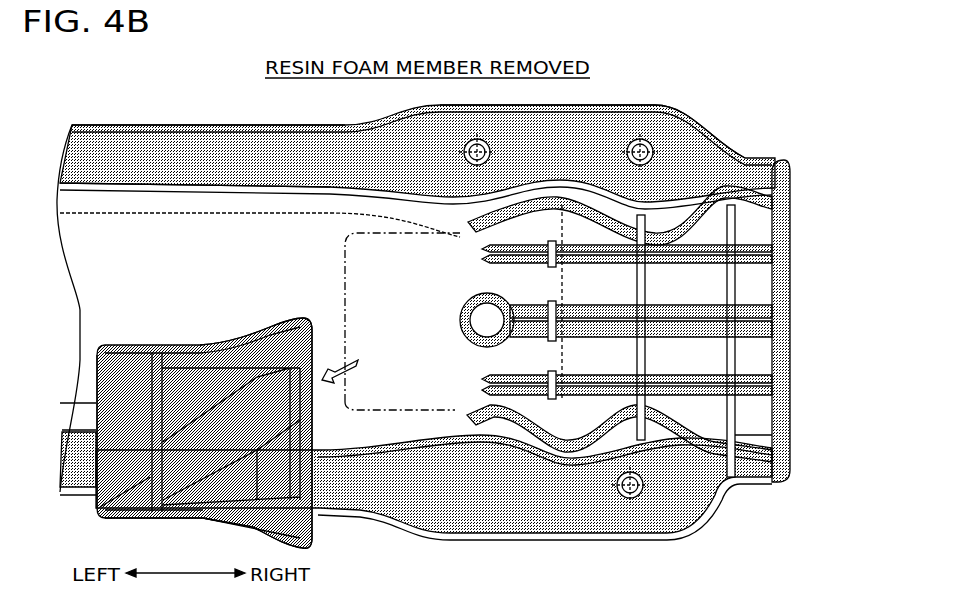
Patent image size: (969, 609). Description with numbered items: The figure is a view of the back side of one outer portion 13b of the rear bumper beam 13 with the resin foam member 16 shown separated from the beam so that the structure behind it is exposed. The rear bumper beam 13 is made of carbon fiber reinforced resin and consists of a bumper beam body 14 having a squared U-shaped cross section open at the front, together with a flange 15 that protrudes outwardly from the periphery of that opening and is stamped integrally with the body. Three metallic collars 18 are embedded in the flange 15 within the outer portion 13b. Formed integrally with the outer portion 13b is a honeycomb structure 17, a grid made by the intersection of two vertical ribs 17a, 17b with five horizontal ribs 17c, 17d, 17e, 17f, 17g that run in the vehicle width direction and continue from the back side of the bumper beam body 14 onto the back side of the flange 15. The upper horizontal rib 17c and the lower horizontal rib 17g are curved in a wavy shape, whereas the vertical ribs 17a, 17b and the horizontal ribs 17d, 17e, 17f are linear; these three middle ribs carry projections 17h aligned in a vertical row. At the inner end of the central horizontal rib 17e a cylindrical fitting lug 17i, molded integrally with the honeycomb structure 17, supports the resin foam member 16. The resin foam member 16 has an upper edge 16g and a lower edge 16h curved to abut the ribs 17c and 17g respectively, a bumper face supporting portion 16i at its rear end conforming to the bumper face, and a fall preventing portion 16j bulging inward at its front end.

The rear bumper beam 13 is at (218, 72).
The outer portion 13b is at (617, 97).
The bumper beam body 14 is at (228, 183).
The flange 15 is at (100, 123).
The resin foam member 16 is at (190, 395).
The upper edge 16g is at (258, 345).
The lower edge 16h is at (255, 540).
The bumper face supporting portion 16i is at (100, 508).
The fall preventing portion 16j is at (105, 392).
The honeycomb structure 17 is at (613, 317).
The vertical rib 17a is at (637, 276).
The vertical rib 17b is at (735, 282).
The upper horizontal rib 17c is at (698, 160).
The horizontal rib 17d is at (656, 262).
The central horizontal rib 17e is at (656, 325).
The horizontal rib 17f is at (660, 384).
The lower horizontal rib 17g is at (717, 470).
The projection 17h is at (548, 258).
The fitting lug 17i is at (460, 332).
The metallic collar 18 is at (466, 140).